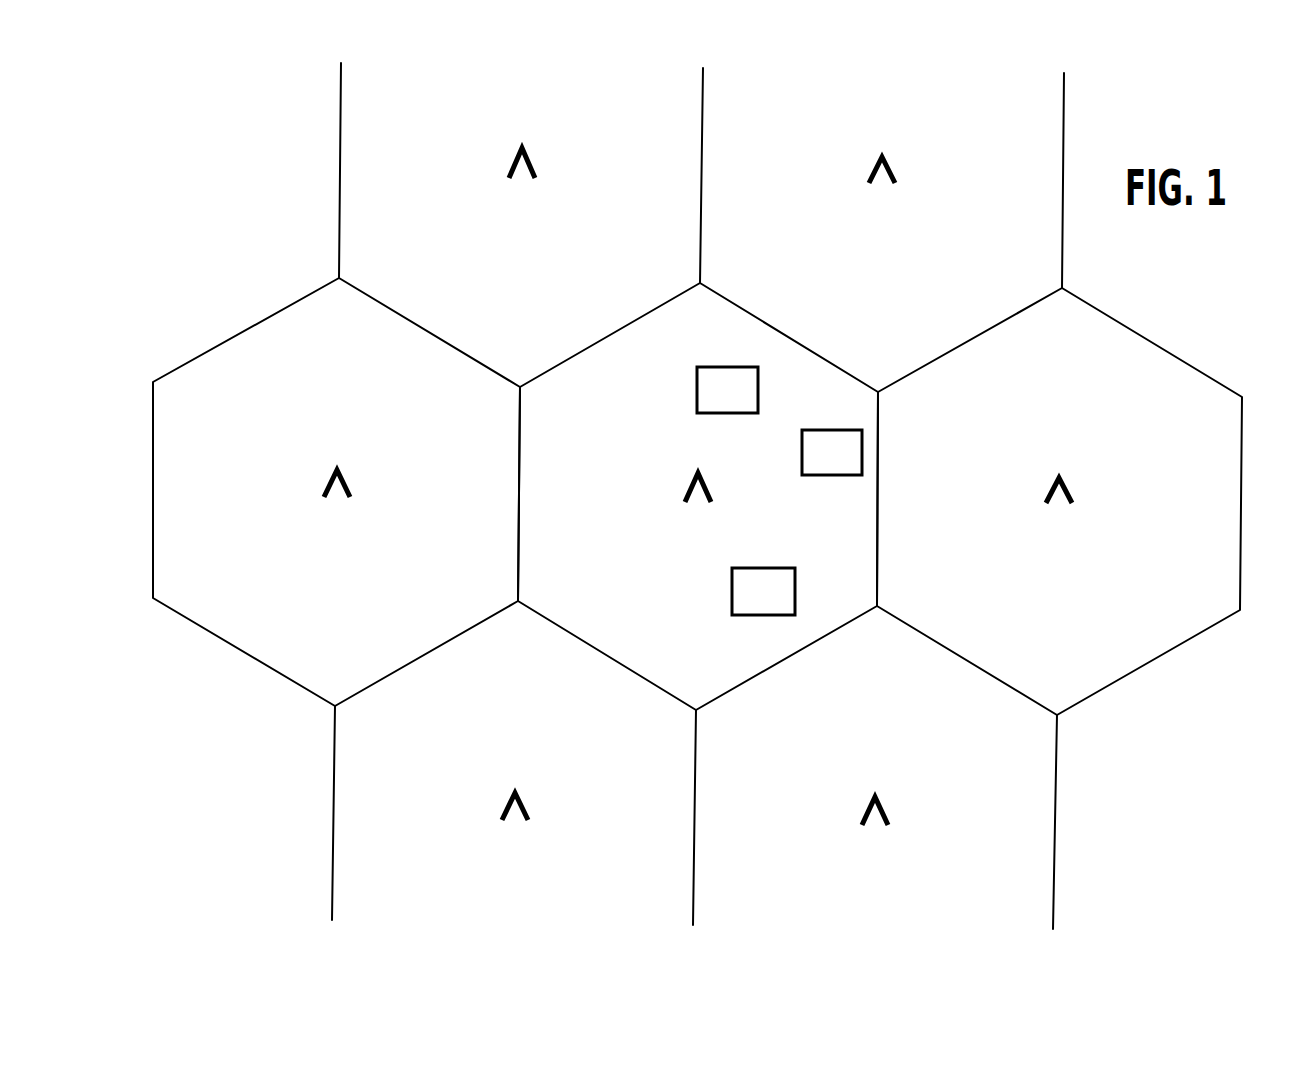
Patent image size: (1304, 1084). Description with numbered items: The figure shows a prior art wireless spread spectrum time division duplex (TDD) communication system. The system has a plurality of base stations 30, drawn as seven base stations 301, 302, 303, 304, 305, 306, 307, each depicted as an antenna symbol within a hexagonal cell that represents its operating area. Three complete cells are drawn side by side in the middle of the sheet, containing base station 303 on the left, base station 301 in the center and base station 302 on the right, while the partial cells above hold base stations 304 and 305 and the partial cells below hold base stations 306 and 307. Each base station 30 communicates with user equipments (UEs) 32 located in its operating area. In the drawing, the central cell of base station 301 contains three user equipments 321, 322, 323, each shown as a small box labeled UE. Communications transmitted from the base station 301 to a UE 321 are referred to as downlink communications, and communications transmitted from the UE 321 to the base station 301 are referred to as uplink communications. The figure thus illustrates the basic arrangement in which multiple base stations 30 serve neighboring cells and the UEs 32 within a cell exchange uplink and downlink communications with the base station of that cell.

The base station 30 is at (705, 510).
The base station 301 is at (705, 510).
The base station 302 is at (1067, 514).
The base station 303 is at (344, 506).
The base station 304 is at (529, 184).
The base station 305 is at (889, 192).
The base station 306 is at (522, 830).
The base station 307 is at (882, 833).
The user equipment 32 is at (729, 610).
The user equipment 321 is at (732, 592).
The user equipment 322 is at (838, 475).
The user equipment 323 is at (717, 413).